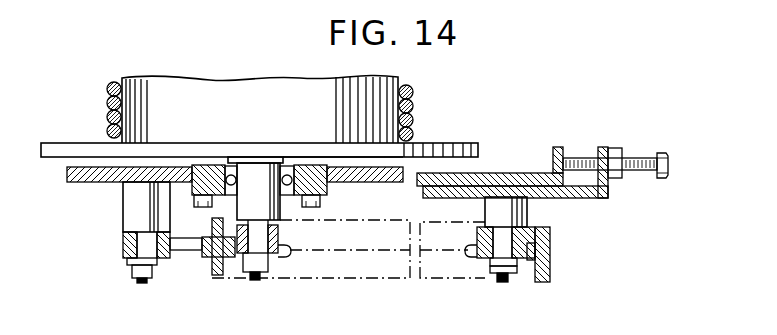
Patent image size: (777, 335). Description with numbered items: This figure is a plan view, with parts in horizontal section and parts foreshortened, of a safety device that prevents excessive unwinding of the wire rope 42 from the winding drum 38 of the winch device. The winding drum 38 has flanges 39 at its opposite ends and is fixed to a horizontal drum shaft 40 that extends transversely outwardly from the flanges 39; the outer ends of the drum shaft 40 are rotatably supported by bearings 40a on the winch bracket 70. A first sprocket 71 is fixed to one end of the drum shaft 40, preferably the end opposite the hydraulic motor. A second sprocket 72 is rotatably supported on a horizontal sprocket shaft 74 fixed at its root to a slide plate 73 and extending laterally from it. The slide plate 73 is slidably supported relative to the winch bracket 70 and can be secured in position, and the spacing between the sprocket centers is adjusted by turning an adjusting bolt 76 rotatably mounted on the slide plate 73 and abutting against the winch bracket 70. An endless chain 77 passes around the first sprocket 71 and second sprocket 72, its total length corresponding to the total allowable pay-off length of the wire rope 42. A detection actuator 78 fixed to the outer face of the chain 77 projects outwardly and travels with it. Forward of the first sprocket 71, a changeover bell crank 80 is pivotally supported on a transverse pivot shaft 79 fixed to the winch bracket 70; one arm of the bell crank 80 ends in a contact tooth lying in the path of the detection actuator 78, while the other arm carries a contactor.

The winding drum 38 is at (182, 83).
The flanges 39 is at (467, 143).
The drum shaft 40 is at (278, 208).
The bearings 40a is at (307, 158).
The wire rope 42 is at (413, 100).
The winch bracket 70 is at (84, 183).
The first sprocket 71 is at (287, 252).
The second sprocket 72 is at (480, 253).
The slide plate 73 is at (577, 199).
The sprocket shaft 74 is at (517, 258).
The adjusting bolt 76 is at (642, 178).
The endless chain 77 is at (345, 252).
The detection actuator 78 is at (207, 260).
The pivot shaft 79 is at (140, 283).
The changeover bell crank 80 is at (182, 251).